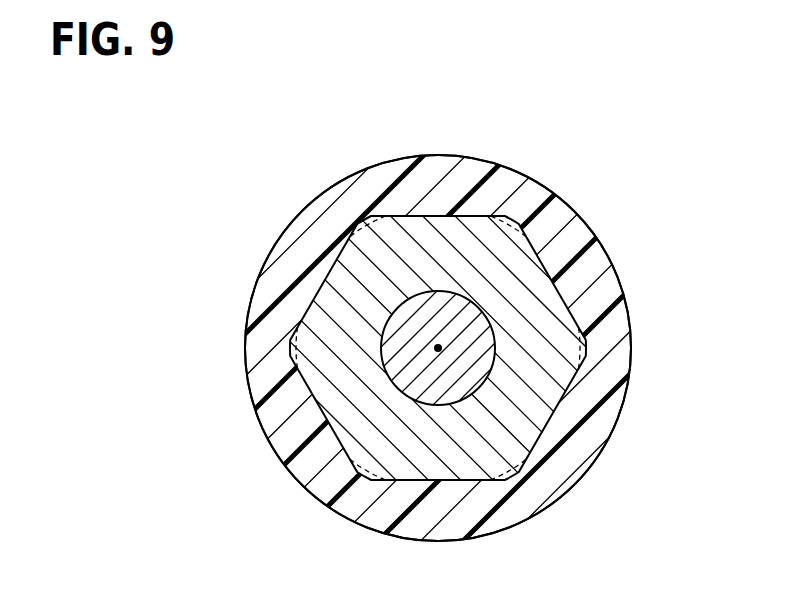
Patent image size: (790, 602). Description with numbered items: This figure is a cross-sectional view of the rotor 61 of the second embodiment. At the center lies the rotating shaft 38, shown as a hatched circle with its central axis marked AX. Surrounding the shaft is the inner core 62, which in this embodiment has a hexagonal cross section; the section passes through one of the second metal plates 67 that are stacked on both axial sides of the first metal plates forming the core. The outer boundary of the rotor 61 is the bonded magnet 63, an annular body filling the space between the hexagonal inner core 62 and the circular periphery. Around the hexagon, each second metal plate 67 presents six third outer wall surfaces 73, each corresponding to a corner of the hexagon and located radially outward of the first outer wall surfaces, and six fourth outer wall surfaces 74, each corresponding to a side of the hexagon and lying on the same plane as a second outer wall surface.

The rotor 61 is at (306, 203).
The inner core 62 is at (546, 262).
The bonded magnet 63 is at (408, 185).
The second metal plate 67 is at (538, 327).
The third outer wall surface 73 is at (362, 218).
The fourth outer wall surface 74 is at (437, 217).
The rotating shaft 38 is at (453, 383).
The axis AX is at (438, 348).